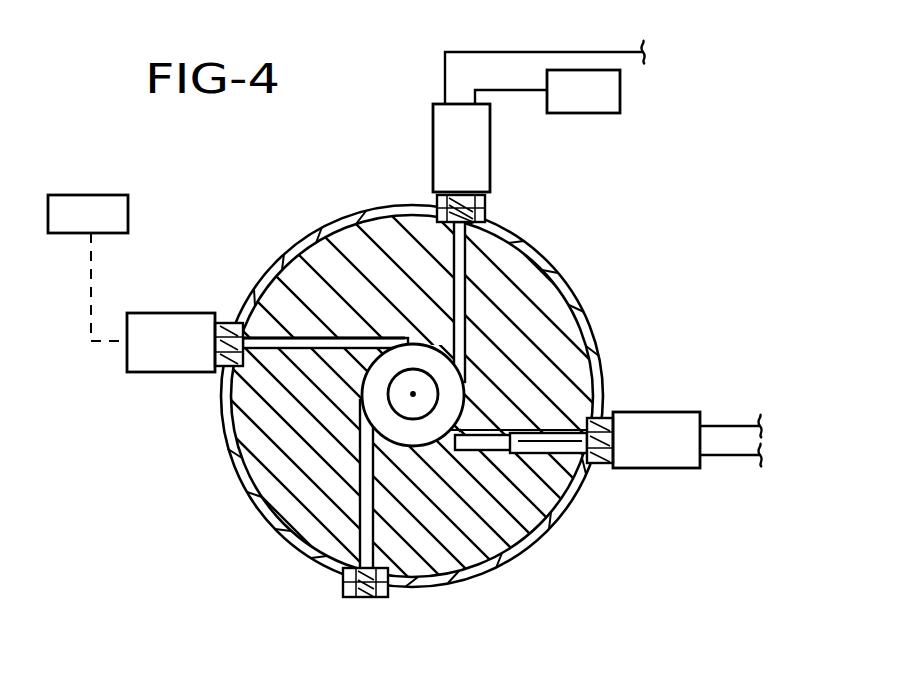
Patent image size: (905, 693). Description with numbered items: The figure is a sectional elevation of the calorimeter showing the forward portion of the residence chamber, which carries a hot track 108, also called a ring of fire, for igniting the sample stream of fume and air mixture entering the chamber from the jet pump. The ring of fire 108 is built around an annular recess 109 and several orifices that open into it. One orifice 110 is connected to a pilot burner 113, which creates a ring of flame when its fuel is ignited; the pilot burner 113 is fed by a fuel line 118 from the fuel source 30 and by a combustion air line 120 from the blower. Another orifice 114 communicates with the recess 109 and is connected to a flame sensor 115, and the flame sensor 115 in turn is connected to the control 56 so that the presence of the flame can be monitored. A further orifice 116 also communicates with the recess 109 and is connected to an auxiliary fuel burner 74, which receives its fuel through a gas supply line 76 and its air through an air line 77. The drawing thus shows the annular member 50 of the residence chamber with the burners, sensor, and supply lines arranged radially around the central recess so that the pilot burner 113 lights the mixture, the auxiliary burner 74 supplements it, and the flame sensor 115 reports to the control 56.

The vessel 50 is at (583, 292).
The hot track 108 is at (453, 393).
The annular recess 109 is at (361, 396).
The orifice 110 is at (487, 207).
The pilot burner 113 is at (490, 158).
The fuel line 118 is at (523, 92).
The combustion air line 120 is at (519, 52).
The fuel source 30 is at (620, 95).
The control 56 is at (128, 213).
The orifice 114 is at (240, 324).
The flame sensor 115 is at (188, 372).
The orifice 116 is at (592, 463).
The auxiliary fuel burner 74 is at (660, 468).
The gas supply line 76 is at (718, 426).
The air line 77 is at (717, 455).